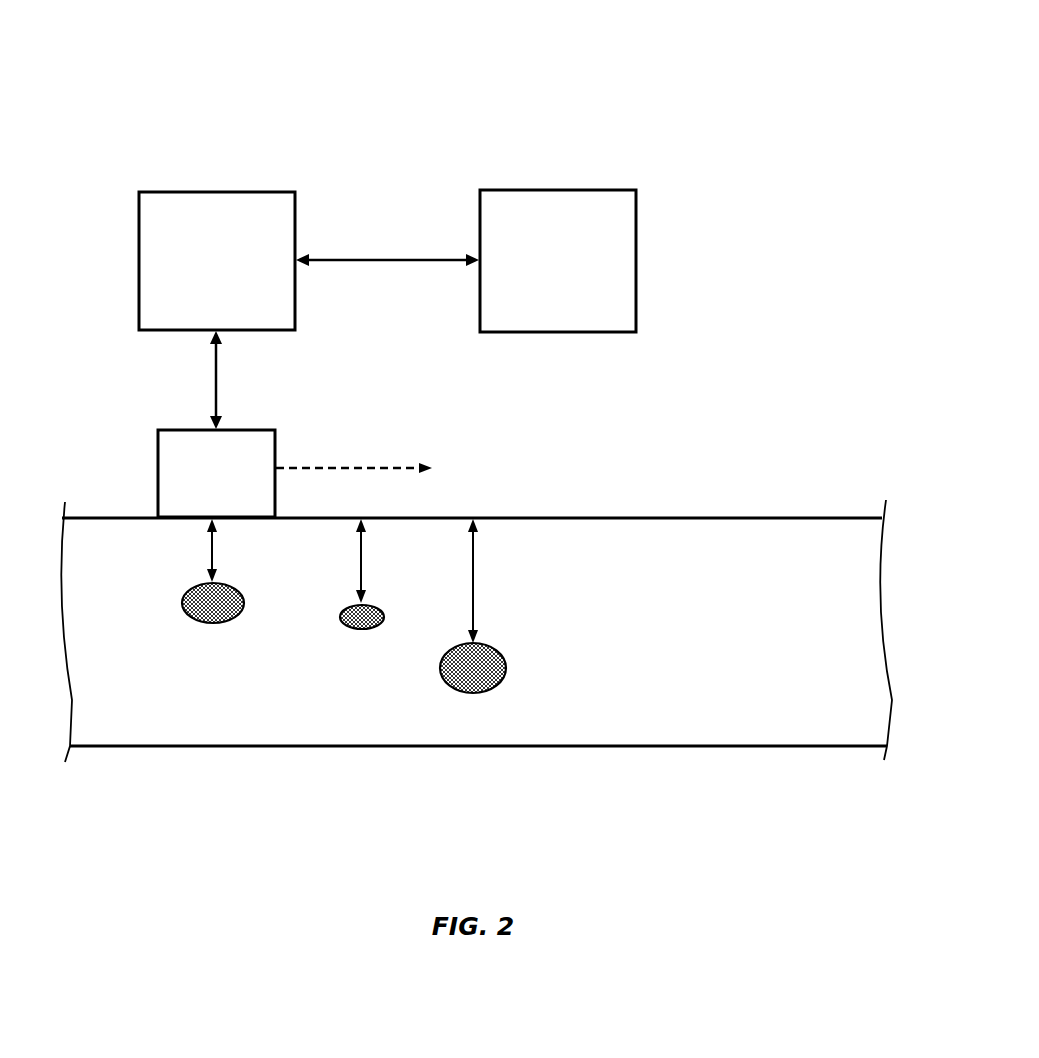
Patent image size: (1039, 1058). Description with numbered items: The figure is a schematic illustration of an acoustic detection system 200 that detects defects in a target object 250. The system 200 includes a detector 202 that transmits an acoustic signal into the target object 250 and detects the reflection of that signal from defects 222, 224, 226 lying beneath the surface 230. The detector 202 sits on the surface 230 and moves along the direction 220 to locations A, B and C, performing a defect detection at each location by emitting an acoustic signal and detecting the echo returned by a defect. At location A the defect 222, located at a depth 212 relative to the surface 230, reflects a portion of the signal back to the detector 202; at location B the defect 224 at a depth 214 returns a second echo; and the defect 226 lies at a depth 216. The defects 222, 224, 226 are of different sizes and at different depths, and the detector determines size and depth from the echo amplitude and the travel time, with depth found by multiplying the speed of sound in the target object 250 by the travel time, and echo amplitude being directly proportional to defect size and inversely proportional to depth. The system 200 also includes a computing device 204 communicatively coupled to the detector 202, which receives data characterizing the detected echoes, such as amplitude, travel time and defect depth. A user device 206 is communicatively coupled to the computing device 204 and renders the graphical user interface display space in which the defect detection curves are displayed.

The acoustic detection system 200 is at (911, 84).
The detector 202 is at (193, 488).
The computing device 204 is at (193, 272).
The user device 206 is at (535, 272).
The depth 212 is at (208, 548).
The depth 214 is at (358, 550).
The depth 216 is at (477, 572).
The direction 220 is at (328, 468).
The defect 222 is at (181, 606).
The defect 224 is at (340, 622).
The defect 226 is at (441, 673).
The surface 230 is at (810, 517).
The target object 250 is at (682, 466).